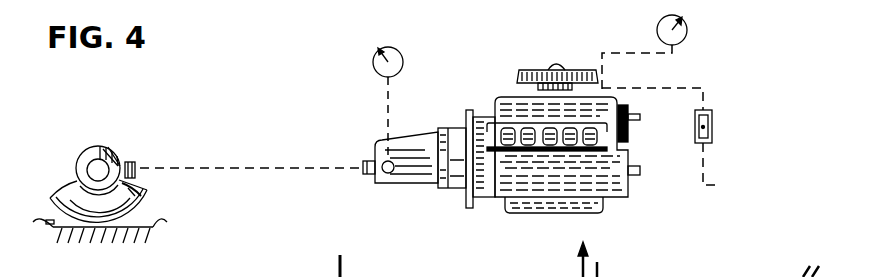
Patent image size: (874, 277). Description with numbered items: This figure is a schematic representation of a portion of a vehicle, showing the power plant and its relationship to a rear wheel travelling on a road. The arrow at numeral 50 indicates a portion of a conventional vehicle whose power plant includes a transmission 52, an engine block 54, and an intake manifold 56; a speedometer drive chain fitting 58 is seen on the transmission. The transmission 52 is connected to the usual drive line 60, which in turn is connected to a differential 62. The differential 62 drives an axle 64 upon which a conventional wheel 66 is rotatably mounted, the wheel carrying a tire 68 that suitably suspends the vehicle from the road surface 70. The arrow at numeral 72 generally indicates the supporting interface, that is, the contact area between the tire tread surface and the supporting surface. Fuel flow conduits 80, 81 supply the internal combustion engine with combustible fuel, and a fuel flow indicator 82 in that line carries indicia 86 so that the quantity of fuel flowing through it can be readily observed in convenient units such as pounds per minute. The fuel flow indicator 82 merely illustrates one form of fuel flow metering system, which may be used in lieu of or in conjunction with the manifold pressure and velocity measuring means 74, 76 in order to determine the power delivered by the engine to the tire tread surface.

The portion of a conventional vehicle 50 is at (528, 124).
The transmission 52 is at (420, 183).
The engine block 54 is at (617, 174).
The intake manifold 56 is at (499, 128).
The speedometer drive chain fitting 58 is at (388, 173).
The drive line 60 is at (220, 168).
The differential 62 is at (90, 147).
The axle 64 is at (92, 170).
The wheel 66 is at (142, 186).
The tire 68 is at (145, 198).
The road surface 70 is at (153, 227).
The supporting interface 72 is at (37, 219).
The manifold pressure measuring means 74 is at (396, 50).
The manifold velocity measuring means 76 is at (686, 22).
The fuel flow conduit 80 is at (718, 186).
The fuel flow conduit 81 is at (703, 88).
The fuel flow indicator 82 is at (712, 118).
The indicia 86 is at (712, 138).